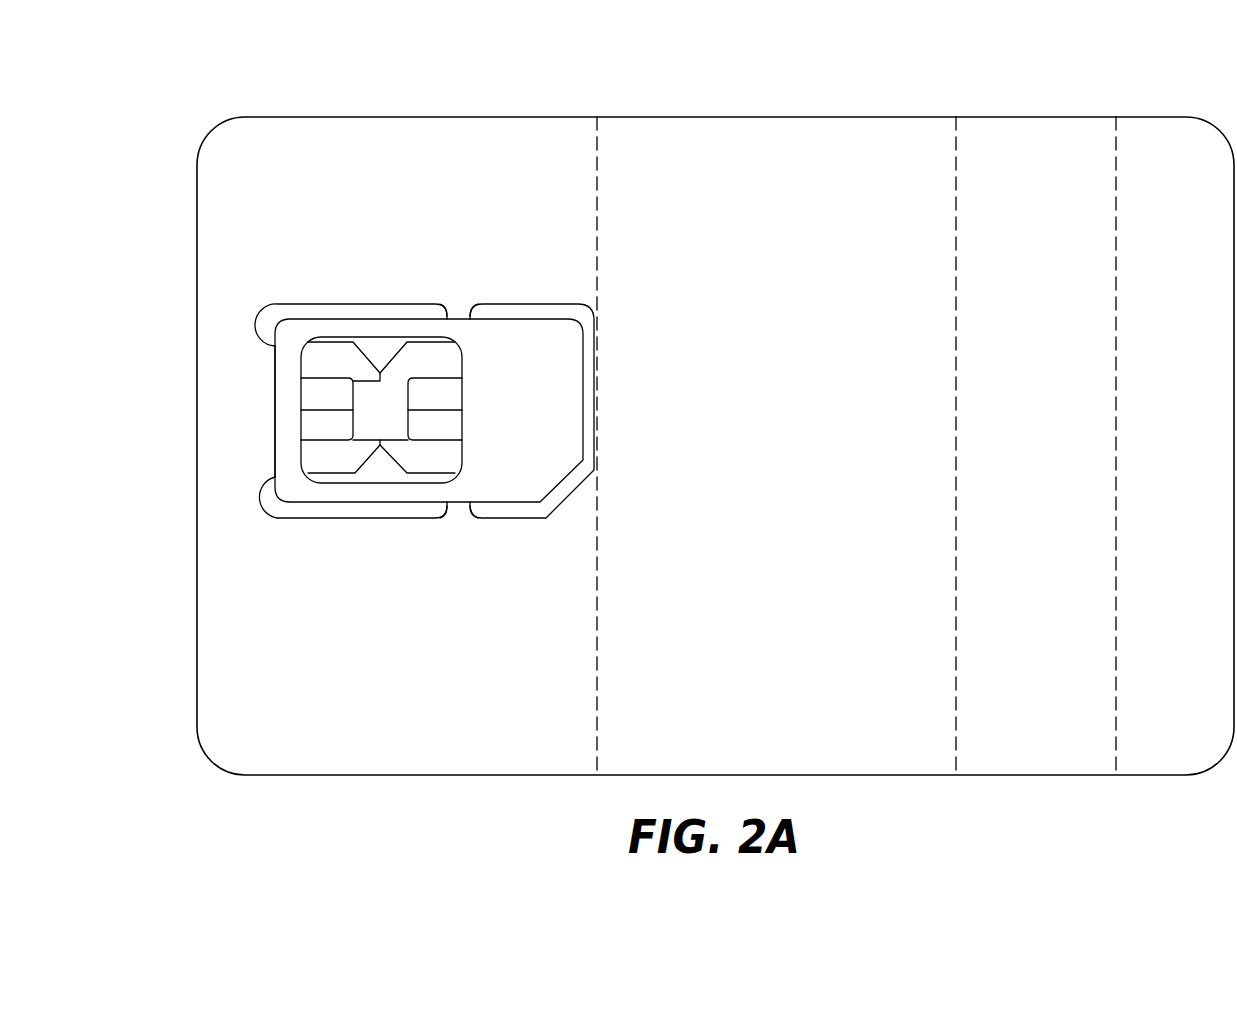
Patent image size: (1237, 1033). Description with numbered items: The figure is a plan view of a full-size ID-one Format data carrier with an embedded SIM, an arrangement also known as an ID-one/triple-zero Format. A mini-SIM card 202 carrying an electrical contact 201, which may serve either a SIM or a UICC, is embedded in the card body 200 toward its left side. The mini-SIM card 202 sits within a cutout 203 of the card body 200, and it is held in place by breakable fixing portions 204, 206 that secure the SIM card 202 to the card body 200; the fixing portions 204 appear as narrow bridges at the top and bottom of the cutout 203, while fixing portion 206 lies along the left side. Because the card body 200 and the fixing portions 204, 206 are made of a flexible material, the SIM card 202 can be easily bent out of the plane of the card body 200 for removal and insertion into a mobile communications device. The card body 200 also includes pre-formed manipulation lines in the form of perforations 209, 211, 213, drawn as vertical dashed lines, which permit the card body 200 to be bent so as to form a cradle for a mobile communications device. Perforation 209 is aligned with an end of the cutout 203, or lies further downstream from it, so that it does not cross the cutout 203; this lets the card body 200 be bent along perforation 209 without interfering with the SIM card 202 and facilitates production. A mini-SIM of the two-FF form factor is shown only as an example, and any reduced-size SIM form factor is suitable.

The card body 200 is at (297, 108).
The electrical contact 201 is at (368, 338).
The mini-SIM card 202 is at (515, 348).
The cutout 203 is at (546, 303).
The breakable fixing portion 204 is at (457, 310).
The breakable fixing portion 206 is at (275, 405).
The perforation 209 is at (597, 146).
The perforation 211 is at (956, 148).
The perforation 213 is at (1116, 148).